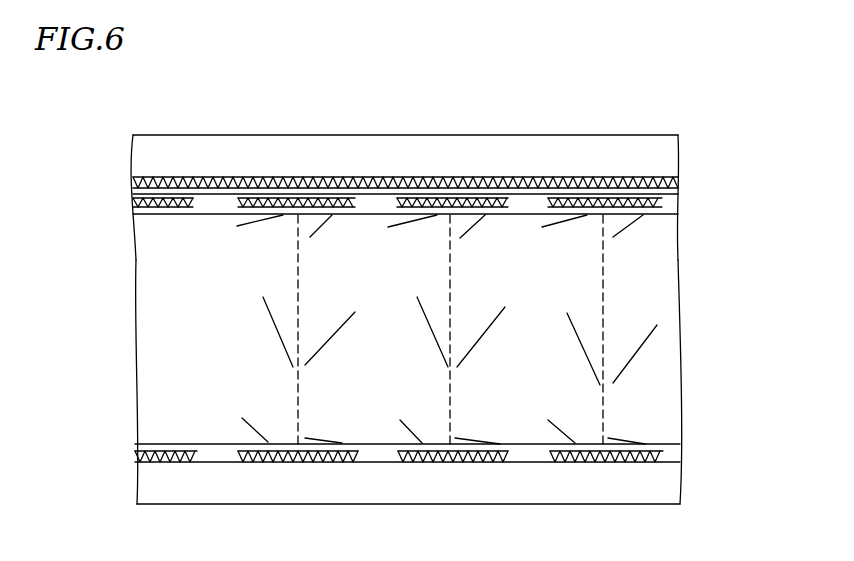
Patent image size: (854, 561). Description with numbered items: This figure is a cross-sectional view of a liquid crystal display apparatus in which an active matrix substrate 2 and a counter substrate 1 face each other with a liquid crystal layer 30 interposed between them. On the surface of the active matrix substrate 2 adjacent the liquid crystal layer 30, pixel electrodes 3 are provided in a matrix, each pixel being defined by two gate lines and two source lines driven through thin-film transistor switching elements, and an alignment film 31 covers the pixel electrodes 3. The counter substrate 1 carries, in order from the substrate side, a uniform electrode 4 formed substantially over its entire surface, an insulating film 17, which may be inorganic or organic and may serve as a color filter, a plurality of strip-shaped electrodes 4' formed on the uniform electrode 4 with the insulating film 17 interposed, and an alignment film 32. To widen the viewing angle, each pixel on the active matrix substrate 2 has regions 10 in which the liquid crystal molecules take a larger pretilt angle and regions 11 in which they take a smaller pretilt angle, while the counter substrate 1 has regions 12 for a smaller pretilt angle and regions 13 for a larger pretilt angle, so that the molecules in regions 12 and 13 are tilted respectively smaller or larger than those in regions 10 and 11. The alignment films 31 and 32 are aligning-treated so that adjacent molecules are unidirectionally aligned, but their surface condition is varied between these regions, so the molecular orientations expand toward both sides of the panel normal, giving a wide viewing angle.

The counter substrate 1 is at (613, 153).
The active matrix substrate 2 is at (532, 483).
The pixel electrodes 3 is at (438, 463).
The uniform electrode 4 is at (405, 136).
The strip-shaped electrodes 4' is at (405, 139).
The regions for a larger pretilt angle 10 is at (249, 453).
The regions for a smaller pretilt angle 11 is at (313, 460).
The regions for a smaller pretilt angle 12 is at (258, 214).
The regions for a larger pretilt angle 13 is at (310, 237).
The insulating film 17 is at (493, 197).
The liquid crystal layer 30 is at (663, 347).
The alignment film 31 is at (672, 455).
The alignment film 32 is at (672, 212).